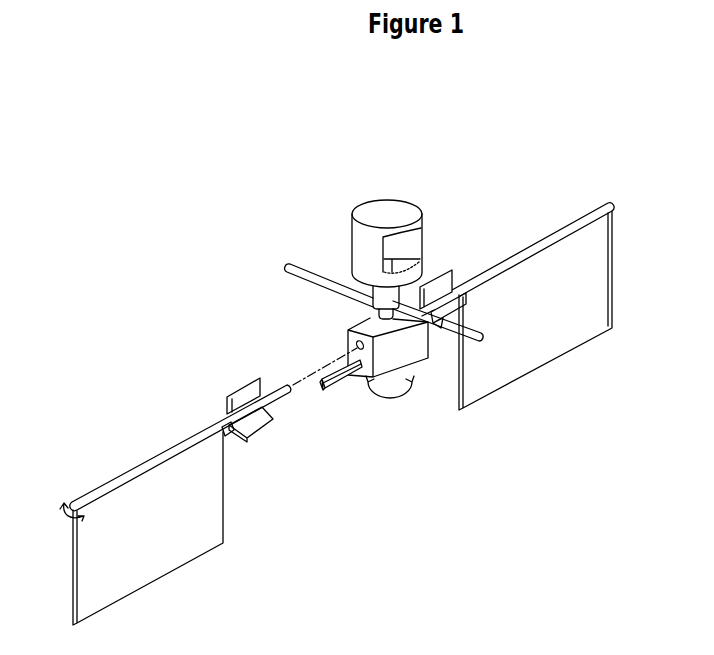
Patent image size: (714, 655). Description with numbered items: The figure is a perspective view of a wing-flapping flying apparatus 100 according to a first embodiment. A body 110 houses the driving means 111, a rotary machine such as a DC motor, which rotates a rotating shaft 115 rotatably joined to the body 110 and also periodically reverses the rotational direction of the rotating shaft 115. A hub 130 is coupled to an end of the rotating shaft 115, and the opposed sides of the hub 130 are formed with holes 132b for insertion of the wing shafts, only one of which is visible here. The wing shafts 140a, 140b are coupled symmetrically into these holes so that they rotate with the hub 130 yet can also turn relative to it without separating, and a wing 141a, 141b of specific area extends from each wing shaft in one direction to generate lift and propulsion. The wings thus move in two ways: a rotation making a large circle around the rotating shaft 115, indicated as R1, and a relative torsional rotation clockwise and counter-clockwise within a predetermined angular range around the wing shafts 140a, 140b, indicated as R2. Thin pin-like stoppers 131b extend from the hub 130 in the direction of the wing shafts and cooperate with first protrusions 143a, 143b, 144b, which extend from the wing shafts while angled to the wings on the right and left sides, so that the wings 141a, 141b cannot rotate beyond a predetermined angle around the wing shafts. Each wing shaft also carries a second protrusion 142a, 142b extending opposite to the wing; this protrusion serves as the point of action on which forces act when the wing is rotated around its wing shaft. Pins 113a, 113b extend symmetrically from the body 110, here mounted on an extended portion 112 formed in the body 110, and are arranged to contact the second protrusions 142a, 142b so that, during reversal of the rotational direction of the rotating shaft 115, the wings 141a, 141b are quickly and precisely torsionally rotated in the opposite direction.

The wing-flapping flying apparatus 100 is at (469, 106).
The body 110 is at (389, 205).
The driving means 111 is at (411, 239).
The extended portion 112 is at (377, 288).
The pin 113a is at (474, 344).
The pin 113b is at (290, 272).
The rotating shaft 115 is at (394, 262).
The hub 130 is at (412, 349).
The stopper 131b is at (340, 381).
The hole for insertion of the wing shaft 132b is at (346, 349).
The wing shaft 140a is at (577, 223).
The wing shaft 140b is at (147, 468).
The wing 141a is at (555, 343).
The wing 141b is at (148, 573).
The second protrusion 142a is at (455, 279).
The second protrusion 142b is at (240, 396).
The first protrusion 143a is at (457, 310).
The first protrusion 143b is at (263, 420).
The first protrusion 144b is at (228, 433).
The rotation around the rotating shaft R1 is at (395, 382).
The relative torsional rotation R2 is at (63, 516).